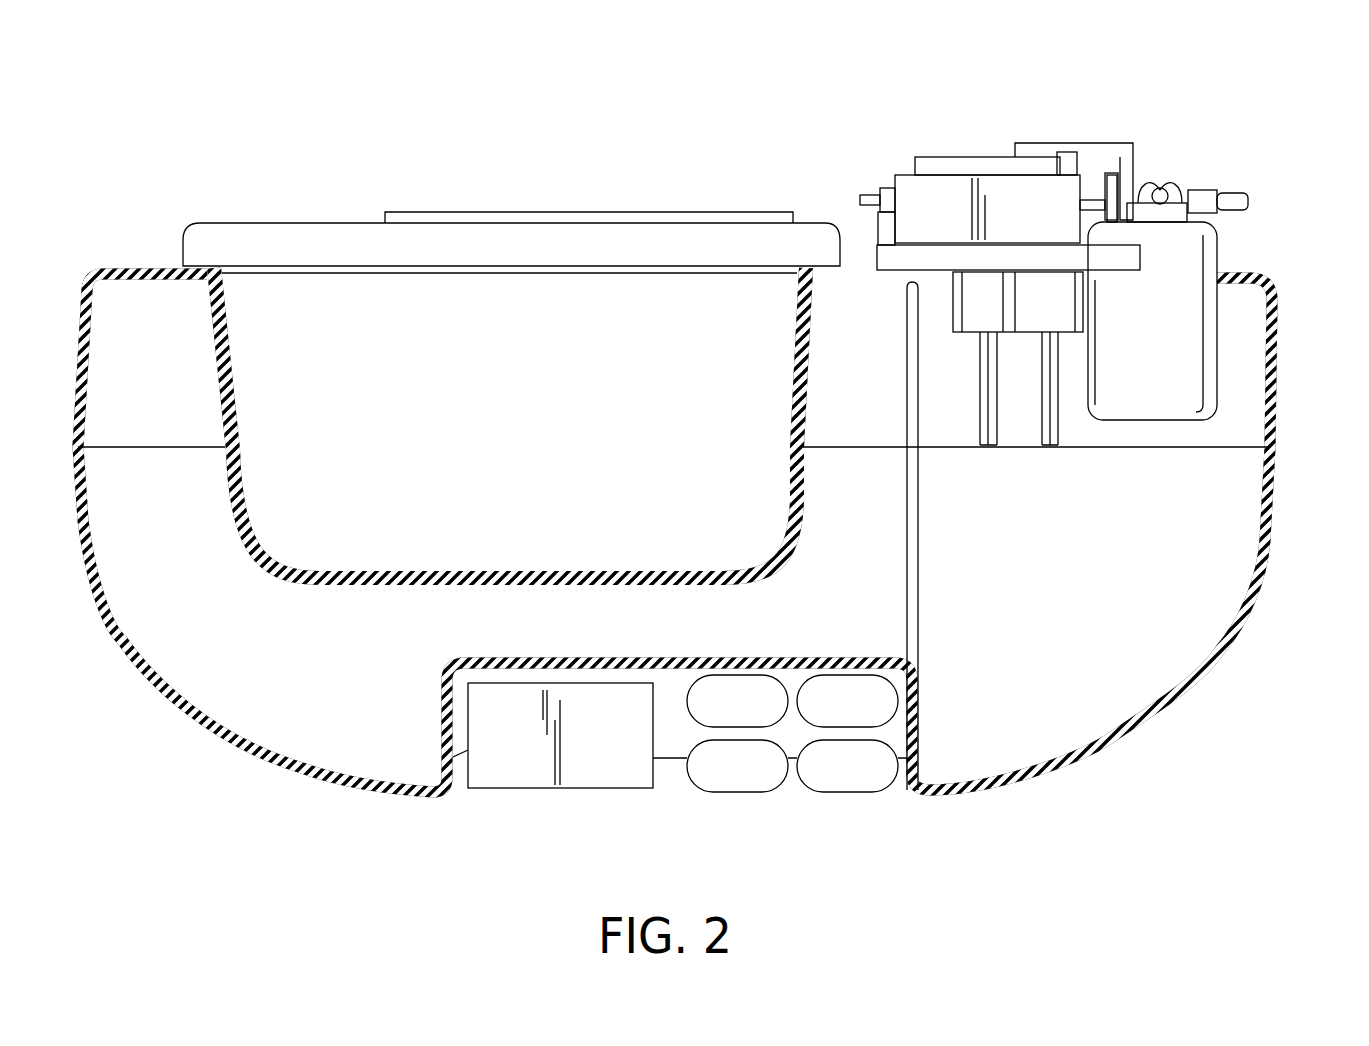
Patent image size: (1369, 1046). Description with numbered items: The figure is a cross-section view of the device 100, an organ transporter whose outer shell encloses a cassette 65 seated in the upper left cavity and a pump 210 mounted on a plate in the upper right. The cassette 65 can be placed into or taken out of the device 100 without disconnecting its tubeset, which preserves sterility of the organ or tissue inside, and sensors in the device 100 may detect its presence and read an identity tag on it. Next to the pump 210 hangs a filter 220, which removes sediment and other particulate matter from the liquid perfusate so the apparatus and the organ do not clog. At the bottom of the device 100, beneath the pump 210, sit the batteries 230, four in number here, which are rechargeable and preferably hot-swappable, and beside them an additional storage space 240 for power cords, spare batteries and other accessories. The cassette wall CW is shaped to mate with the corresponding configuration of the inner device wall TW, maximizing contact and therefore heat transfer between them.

The device 100 is at (545, 122).
The cassette 65 is at (430, 237).
The pump 210 is at (948, 188).
The filter 220 is at (1193, 252).
The batteries 230 is at (725, 783).
The additional storage space 240 is at (600, 778).
The inner device wall TW is at (112, 268).
The cassette wall CW is at (232, 330).